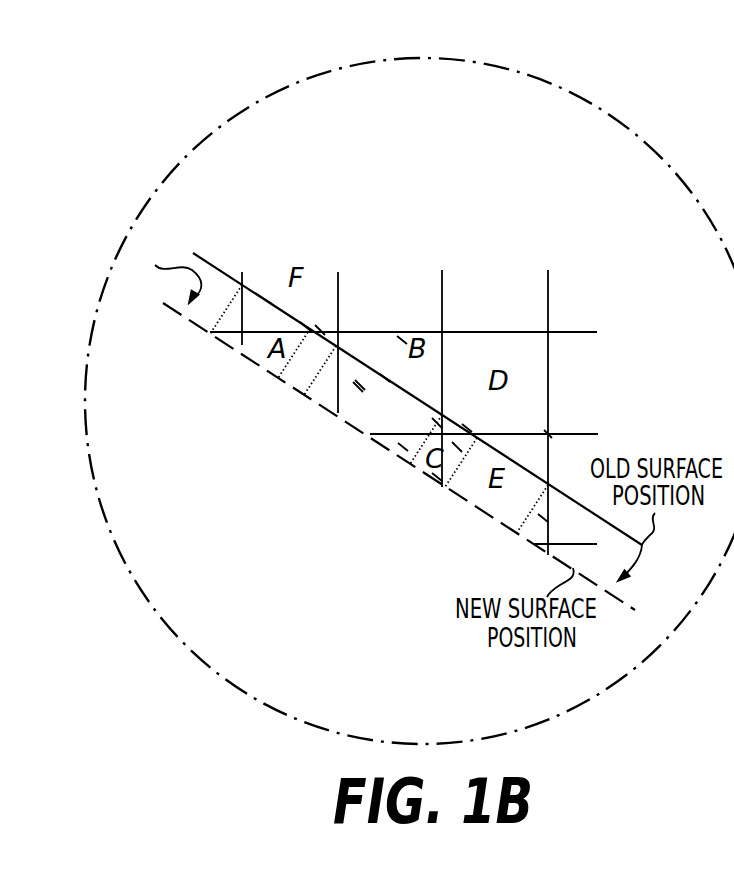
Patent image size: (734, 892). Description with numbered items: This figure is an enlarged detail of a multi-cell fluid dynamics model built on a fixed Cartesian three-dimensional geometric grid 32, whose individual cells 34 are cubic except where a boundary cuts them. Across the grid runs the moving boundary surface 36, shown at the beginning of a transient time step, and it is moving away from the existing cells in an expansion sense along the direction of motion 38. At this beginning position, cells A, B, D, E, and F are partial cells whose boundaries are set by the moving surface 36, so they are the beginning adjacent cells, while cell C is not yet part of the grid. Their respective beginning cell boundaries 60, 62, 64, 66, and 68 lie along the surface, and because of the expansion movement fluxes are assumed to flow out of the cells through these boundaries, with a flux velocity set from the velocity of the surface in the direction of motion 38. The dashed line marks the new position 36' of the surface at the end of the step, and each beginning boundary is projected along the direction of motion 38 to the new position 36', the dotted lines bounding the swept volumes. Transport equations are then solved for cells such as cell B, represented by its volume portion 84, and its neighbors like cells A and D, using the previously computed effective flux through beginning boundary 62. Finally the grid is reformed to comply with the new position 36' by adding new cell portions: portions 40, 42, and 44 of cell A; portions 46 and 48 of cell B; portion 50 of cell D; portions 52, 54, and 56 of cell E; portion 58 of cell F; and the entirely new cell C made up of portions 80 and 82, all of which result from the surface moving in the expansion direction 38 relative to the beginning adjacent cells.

The geometric grid 32 is at (639, 252).
The cell 34 is at (550, 288).
The moving boundary surface 36 is at (417, 417).
The new position of moving surface 36' is at (401, 489).
The direction of motion 38 is at (169, 269).
The new cell portion of cell A 40 is at (305, 340).
The new cell portion of cell A 42 is at (322, 330).
The new cell portion of cell A 44 is at (358, 387).
The new cell portion of cell B 46 is at (360, 385).
The new cell portion of cell B 48 is at (437, 423).
The new cell portion of cell D 50 is at (457, 447).
The new cell portion of cell E 52 is at (467, 428).
The new cell portion of cell E 54 is at (549, 444).
The new cell portion of cell E 56 is at (543, 518).
The new cell portion of cell F 58 is at (252, 296).
The beginning cell boundary 60 is at (312, 337).
The beginning cell boundary 62 is at (385, 378).
The beginning cell boundary 64 is at (463, 432).
The beginning cell boundary 66 is at (512, 468).
The beginning cell boundary 68 is at (265, 300).
The portion of new cell C 80 is at (403, 447).
The portion of new cell C 82 is at (437, 477).
The volume portion of cell B 84 is at (403, 336).